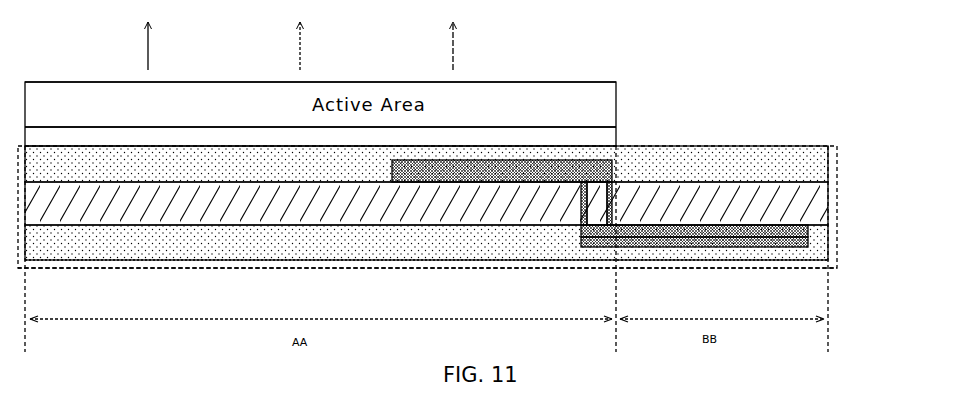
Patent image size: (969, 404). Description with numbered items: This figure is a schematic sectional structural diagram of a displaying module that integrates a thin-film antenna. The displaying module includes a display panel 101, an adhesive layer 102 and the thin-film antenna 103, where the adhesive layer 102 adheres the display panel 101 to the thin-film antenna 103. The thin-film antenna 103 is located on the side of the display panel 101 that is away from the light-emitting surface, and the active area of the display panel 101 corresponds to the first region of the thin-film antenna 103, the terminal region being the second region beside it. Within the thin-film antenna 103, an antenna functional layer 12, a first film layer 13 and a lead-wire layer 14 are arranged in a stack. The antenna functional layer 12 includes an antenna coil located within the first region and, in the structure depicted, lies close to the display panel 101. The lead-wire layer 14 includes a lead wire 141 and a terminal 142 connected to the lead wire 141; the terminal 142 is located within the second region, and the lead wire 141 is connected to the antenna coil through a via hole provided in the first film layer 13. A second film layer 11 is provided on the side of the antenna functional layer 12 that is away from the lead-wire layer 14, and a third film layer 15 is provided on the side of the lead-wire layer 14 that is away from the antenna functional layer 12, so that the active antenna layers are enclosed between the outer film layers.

The display panel 101 is at (583, 96).
The adhesive layer 102 is at (586, 137).
The thin-film antenna 103 is at (763, 267).
The second film layer 11 is at (796, 171).
The antenna functional layer 12 is at (582, 172).
The first film layer 13 is at (796, 211).
The lead-wire layer 14 is at (756, 240).
The lead wire 141 is at (777, 229).
The terminal 142 is at (810, 242).
The third film layer 15 is at (770, 253).